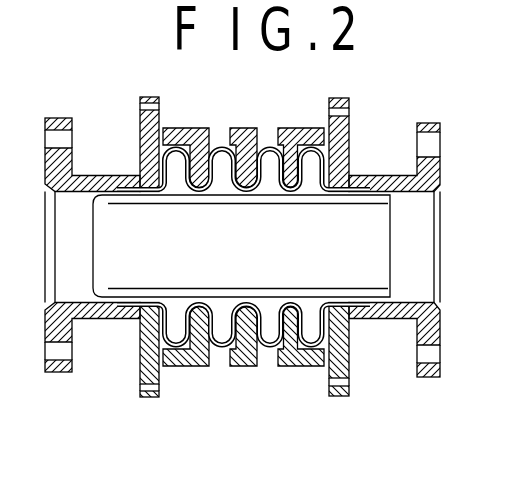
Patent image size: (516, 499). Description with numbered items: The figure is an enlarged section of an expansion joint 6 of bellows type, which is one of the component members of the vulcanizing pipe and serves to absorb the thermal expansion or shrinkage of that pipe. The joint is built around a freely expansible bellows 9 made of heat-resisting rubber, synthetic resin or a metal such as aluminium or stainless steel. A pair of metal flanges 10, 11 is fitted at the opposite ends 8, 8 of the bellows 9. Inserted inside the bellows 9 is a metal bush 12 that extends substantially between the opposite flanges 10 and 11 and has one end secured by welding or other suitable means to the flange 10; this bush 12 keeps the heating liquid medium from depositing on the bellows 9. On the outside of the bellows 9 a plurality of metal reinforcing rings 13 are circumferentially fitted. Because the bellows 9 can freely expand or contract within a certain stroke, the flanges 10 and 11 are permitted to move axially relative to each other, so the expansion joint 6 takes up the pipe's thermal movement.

The expansion joint of bellows type 6 is at (197, 374).
The opposite ends of the bellows 8 is at (130, 188).
The bellows 9 is at (222, 146).
The flange 10 is at (83, 185).
The flange 11 is at (441, 161).
The bush 12 is at (302, 205).
The reinforcing rings 13 is at (264, 363).